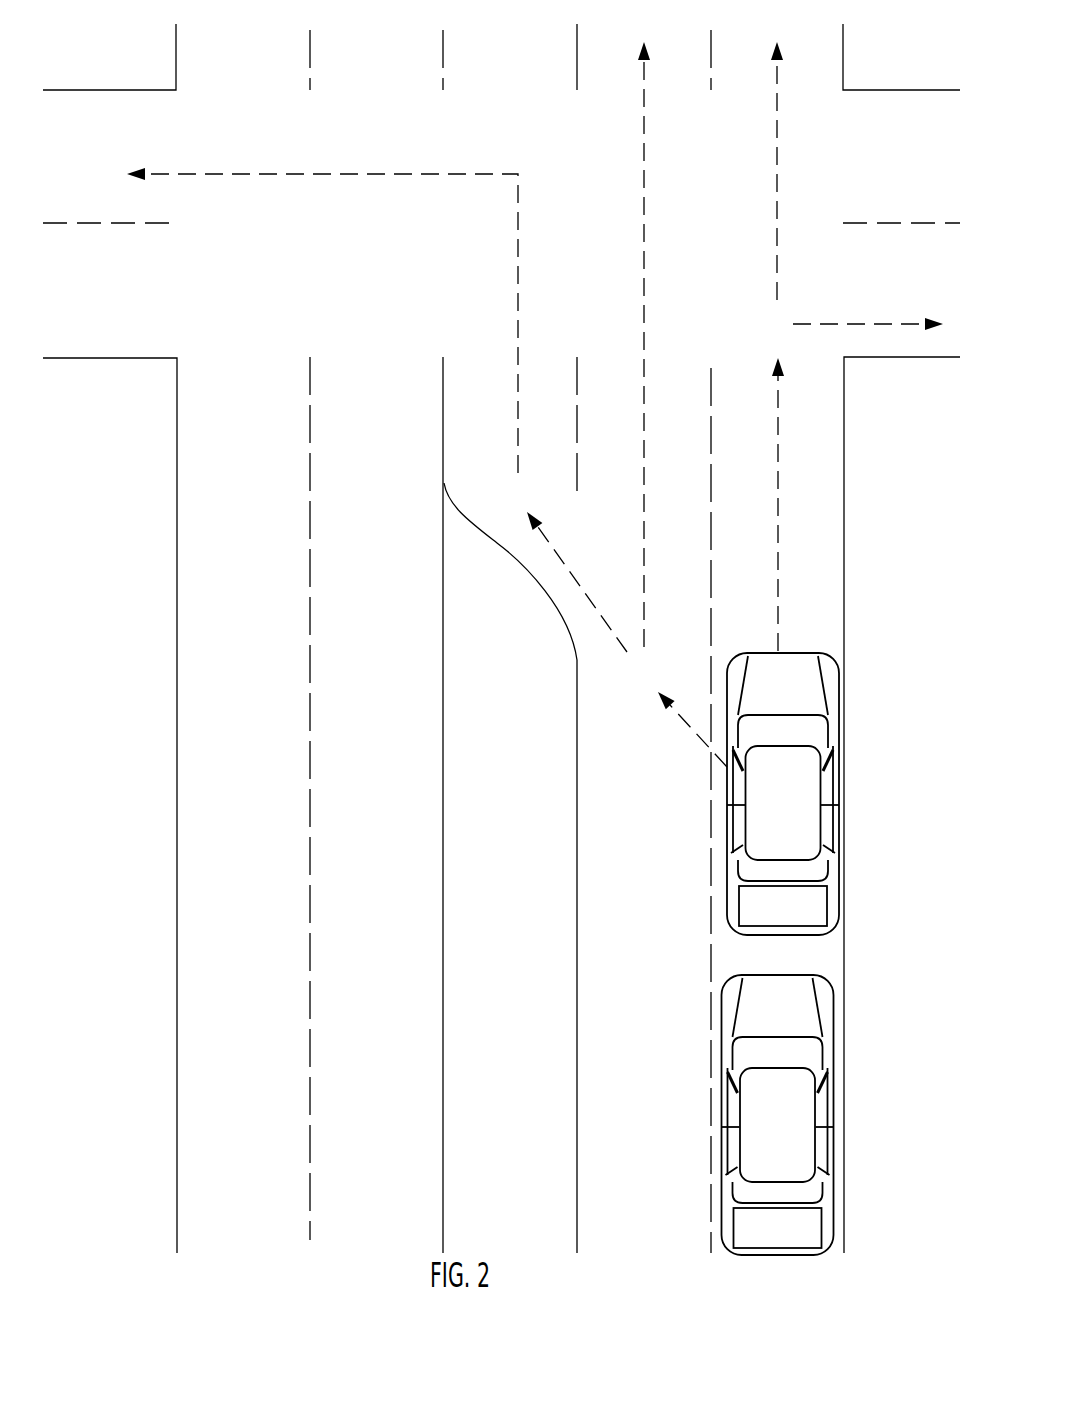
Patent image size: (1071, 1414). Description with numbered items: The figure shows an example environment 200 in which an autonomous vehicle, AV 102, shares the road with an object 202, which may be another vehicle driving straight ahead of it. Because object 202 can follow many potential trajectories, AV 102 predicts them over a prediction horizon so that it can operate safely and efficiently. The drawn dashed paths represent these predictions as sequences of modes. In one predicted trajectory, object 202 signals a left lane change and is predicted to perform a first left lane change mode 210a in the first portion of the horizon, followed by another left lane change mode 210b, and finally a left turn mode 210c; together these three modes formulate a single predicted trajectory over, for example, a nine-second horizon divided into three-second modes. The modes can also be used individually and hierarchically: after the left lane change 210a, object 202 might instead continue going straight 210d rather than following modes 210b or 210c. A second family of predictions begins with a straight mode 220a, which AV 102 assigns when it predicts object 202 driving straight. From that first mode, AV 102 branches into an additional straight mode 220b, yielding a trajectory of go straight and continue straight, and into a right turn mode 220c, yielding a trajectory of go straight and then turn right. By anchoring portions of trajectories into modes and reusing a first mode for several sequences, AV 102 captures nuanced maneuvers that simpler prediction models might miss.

The environment 200 is at (92, 58).
The autonomous vehicle 102 is at (797, 1136).
The object 202 is at (805, 825).
The left lane change mode 210a is at (681, 717).
The left lane change mode 210b is at (568, 570).
The left turn mode 210c is at (518, 190).
The straight mode 210d is at (644, 255).
The straight mode 220a is at (778, 597).
The additional straight mode 220b is at (777, 142).
The right turn mode 220c is at (903, 324).